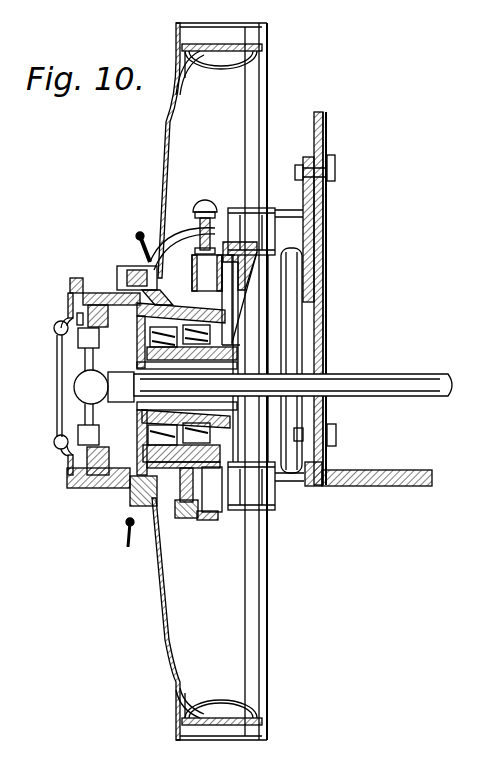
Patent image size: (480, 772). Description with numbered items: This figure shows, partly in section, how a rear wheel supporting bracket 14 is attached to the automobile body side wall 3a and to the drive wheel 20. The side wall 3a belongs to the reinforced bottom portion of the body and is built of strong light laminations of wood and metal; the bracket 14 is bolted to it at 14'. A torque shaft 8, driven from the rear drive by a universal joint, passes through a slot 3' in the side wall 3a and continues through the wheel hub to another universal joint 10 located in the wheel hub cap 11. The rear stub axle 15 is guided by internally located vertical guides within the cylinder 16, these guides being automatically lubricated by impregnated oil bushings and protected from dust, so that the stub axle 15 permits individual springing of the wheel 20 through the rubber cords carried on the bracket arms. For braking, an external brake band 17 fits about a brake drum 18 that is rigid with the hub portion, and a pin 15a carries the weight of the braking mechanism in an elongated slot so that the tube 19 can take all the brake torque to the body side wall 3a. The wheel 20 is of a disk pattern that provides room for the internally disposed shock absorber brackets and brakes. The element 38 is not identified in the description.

The body side wall 3a is at (321, 258).
The slot 3' is at (338, 298).
The torque shaft 8 is at (382, 382).
The universal joint 10 is at (88, 369).
The wheel hub cap 11 is at (88, 493).
The bracket 14 is at (325, 229).
The bolt 14' is at (311, 290).
The rear stub axle 15 is at (237, 352).
The pin 15a is at (215, 228).
The cylinder 16 is at (268, 302).
The external brake band 17 is at (189, 522).
The brake drum 18 is at (216, 518).
The tube 19 is at (198, 206).
The wheel 20 is at (172, 642).
The flange 38 is at (392, 478).